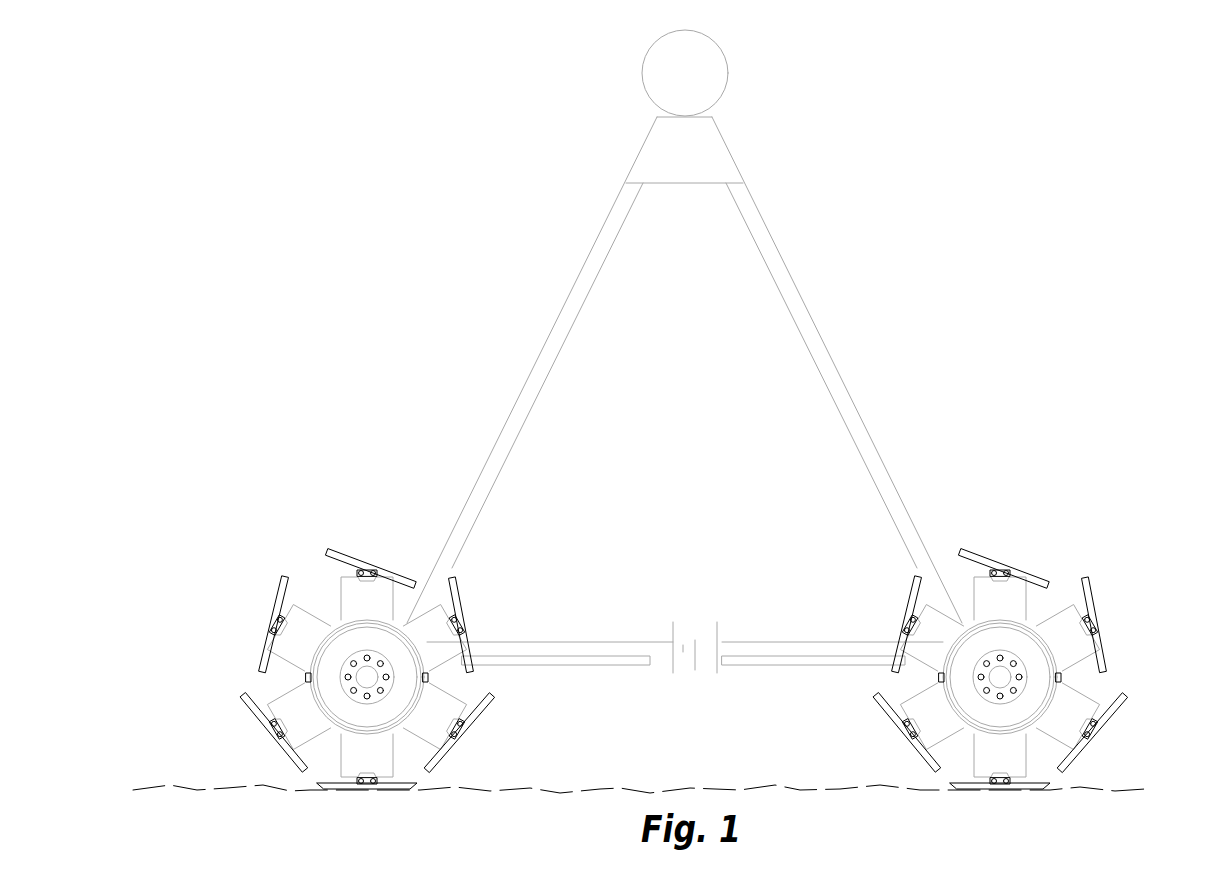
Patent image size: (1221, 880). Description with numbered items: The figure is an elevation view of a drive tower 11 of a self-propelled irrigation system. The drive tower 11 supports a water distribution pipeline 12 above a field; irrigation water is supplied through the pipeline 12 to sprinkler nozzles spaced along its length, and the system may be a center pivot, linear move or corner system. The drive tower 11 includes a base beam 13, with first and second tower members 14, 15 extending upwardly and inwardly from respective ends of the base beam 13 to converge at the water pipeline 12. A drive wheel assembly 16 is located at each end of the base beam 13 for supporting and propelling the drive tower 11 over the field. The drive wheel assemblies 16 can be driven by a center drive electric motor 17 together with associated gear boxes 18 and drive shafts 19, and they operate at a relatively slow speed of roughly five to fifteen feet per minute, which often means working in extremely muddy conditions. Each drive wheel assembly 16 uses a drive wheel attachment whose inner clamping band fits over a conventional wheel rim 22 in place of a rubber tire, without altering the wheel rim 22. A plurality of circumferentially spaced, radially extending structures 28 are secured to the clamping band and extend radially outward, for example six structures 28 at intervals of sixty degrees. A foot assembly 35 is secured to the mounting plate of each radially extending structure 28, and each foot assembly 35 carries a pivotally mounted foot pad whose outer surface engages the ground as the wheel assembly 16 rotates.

The drive tower 11 is at (693, 409).
The water distribution pipeline 12 is at (645, 65).
The base beam 13 is at (685, 641).
The first tower member 14 is at (545, 343).
The second tower member 15 is at (823, 340).
The drive wheel assembly 16 is at (693, 641).
The center drive electric motor 17 is at (697, 628).
The gear box 18 is at (690, 668).
The drive shaft 19 is at (592, 663).
The wheel rim 22 is at (345, 643).
The radially extending structure 28 is at (348, 588).
The foot assembly 35 is at (365, 562).